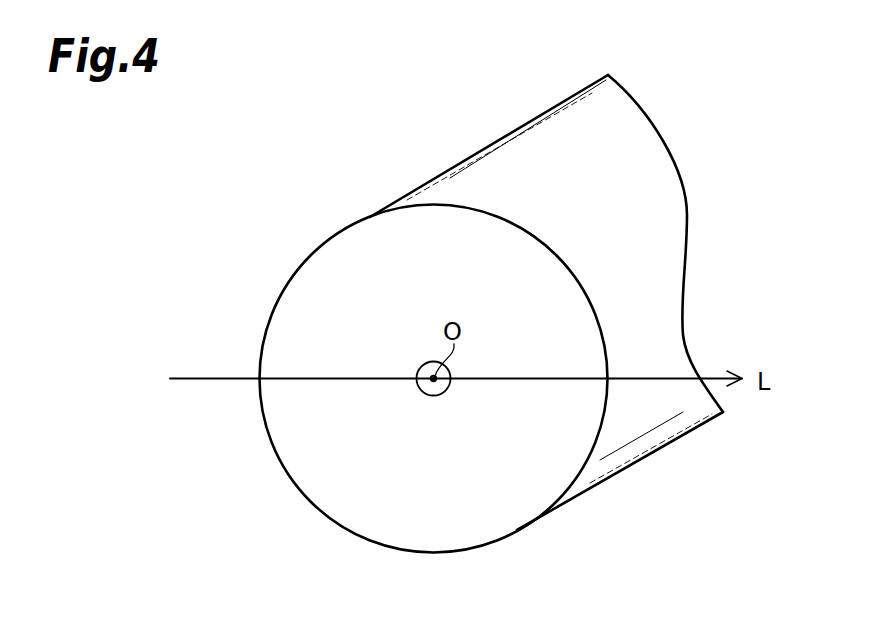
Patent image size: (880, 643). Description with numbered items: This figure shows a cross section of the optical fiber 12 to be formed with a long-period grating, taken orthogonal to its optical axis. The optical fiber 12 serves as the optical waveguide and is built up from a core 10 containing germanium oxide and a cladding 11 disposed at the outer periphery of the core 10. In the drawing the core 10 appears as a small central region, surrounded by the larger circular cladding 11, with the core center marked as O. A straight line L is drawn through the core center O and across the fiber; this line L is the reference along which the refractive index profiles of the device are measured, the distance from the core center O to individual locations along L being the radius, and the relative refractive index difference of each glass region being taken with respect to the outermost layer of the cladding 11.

The core 10 is at (430, 388).
The cladding 11 is at (506, 525).
The optical fiber 12 is at (637, 135).